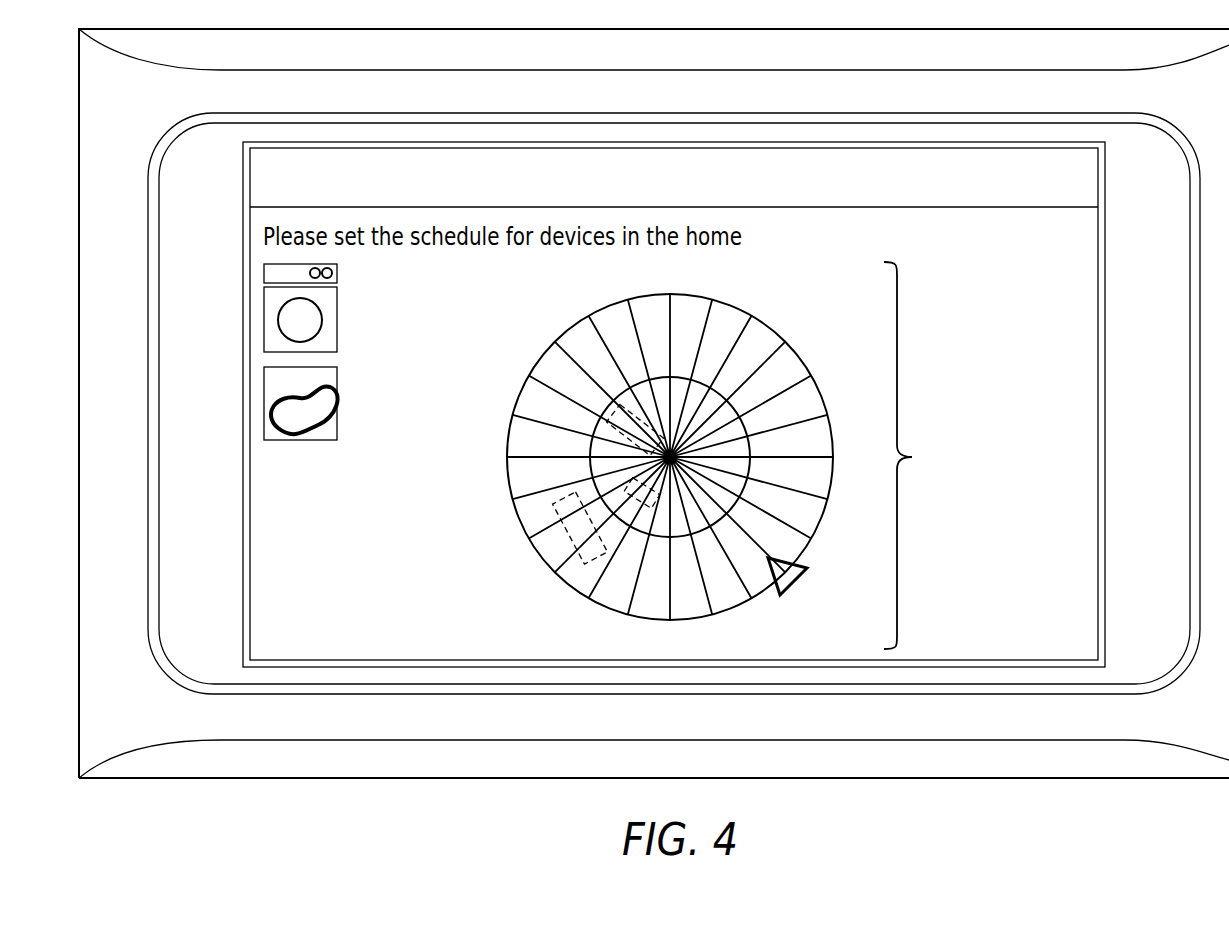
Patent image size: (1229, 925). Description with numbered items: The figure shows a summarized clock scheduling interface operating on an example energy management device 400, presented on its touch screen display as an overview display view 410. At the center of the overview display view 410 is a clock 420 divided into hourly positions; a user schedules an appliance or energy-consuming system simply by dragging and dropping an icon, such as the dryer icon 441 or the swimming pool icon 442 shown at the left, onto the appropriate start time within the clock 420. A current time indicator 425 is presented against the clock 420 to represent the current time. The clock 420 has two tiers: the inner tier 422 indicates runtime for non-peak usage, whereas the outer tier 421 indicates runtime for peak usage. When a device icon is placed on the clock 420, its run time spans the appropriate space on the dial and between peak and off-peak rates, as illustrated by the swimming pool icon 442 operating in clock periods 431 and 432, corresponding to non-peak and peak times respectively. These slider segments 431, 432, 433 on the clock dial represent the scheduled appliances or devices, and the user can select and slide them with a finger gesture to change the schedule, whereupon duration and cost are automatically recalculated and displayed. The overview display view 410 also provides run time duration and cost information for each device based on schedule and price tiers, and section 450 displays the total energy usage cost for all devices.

The energy management device 400 is at (676, 28).
The overview display view 410 is at (1090, 181).
The clock 420 is at (735, 612).
The outer tier 421 is at (738, 318).
The inner tier 422 is at (745, 390).
The current time indicator 425 is at (803, 568).
The clock period 431 is at (630, 497).
The clock period 432 is at (560, 548).
The slider segment 433 is at (627, 418).
The dryer icon 441 is at (264, 320).
The swimming pool icon 442 is at (264, 404).
The section 450 is at (1050, 260).